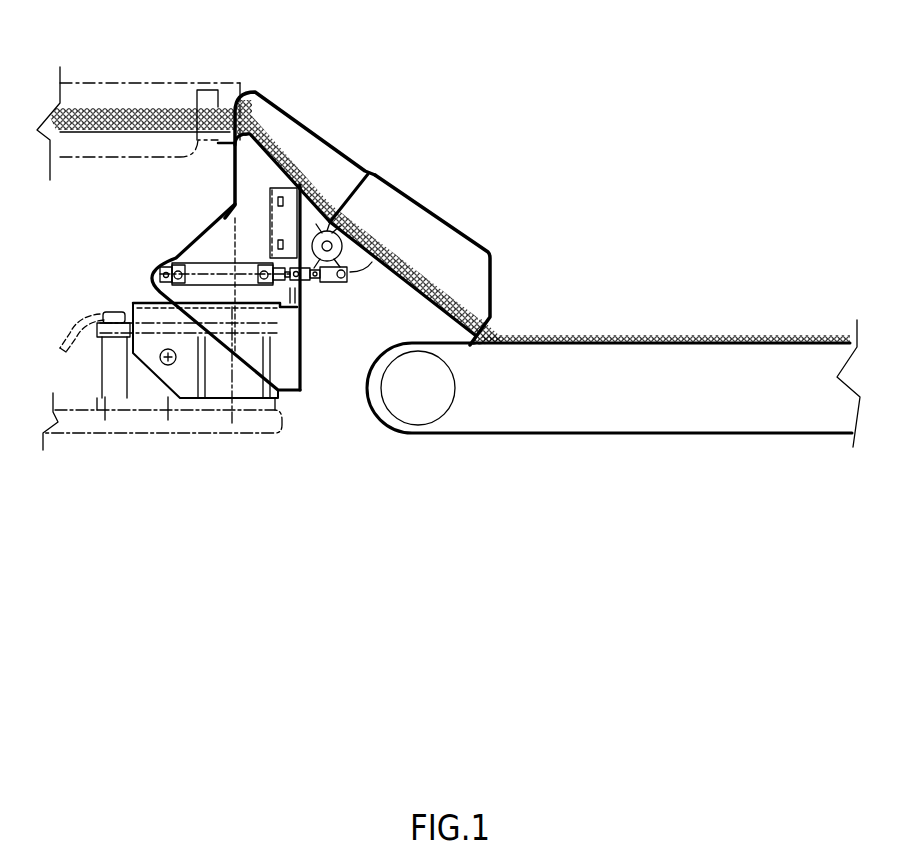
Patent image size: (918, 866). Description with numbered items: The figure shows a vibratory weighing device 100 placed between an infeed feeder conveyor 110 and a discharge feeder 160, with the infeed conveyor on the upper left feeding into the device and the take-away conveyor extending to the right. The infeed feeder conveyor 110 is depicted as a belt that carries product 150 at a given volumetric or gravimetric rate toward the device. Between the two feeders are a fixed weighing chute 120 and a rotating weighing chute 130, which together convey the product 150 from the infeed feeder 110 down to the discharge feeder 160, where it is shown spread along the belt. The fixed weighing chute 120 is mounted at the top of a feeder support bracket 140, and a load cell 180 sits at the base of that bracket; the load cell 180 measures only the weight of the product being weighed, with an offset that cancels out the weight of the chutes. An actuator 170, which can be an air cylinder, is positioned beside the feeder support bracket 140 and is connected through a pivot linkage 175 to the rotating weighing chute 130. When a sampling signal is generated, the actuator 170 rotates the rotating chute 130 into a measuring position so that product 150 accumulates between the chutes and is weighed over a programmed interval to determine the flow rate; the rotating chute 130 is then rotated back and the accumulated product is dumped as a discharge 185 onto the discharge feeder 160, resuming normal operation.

The material handling system 100 is at (288, 80).
The infeed feeder conveyor 110 is at (148, 83).
The fixed weighing chute 120 is at (303, 148).
The rotating weighing chute 130 is at (477, 273).
The feeder support bracket 140 is at (170, 258).
The product 150 is at (688, 335).
The discharge feeder 160 is at (723, 423).
The actuator 170 is at (192, 265).
The pivot link 175 is at (323, 257).
The load cell 180 is at (112, 373).
The discharge material 185 is at (490, 313).